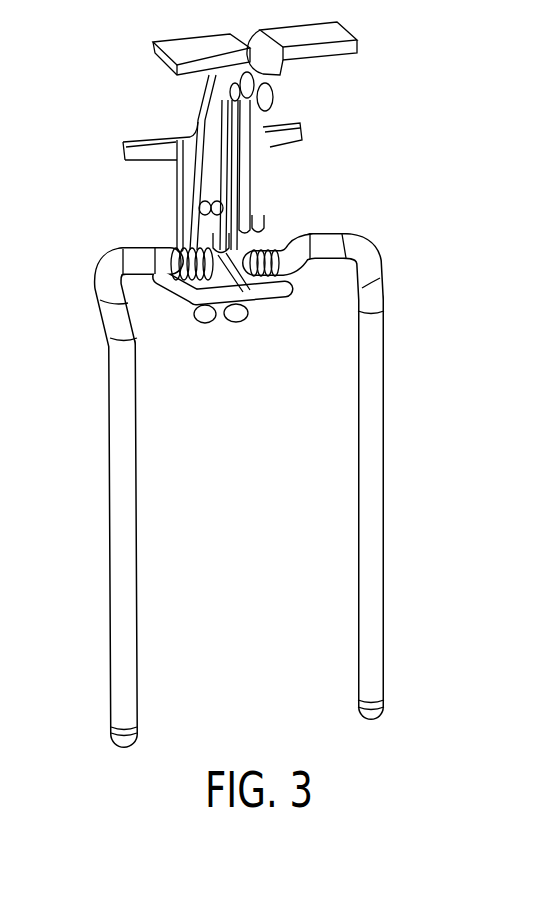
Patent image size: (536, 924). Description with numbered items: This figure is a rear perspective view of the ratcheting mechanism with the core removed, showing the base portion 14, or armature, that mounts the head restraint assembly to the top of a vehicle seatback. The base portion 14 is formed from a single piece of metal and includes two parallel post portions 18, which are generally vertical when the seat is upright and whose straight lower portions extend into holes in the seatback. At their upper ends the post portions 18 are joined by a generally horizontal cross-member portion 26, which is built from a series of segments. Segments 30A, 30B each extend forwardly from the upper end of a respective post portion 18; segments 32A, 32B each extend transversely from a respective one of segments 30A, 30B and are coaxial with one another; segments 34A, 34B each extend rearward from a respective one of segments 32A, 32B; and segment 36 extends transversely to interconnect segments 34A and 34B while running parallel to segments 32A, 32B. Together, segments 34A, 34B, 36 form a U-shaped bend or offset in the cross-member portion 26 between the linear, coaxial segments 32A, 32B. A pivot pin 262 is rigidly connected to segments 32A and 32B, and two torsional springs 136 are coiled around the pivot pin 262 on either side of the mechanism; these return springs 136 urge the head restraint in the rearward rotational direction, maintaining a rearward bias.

The base portion 14 is at (234, 450).
The post portions 18 is at (117, 498).
The cross-member portion 26 is at (346, 436).
The segment 30A is at (100, 300).
The segment 30B is at (367, 268).
The segment 32A is at (118, 252).
The segment 32B is at (320, 238).
The segment 34A is at (137, 279).
The segment 34B is at (293, 272).
The segment 36 is at (266, 296).
The torsional springs 136 is at (176, 248).
The pivot pin 262 is at (128, 288).